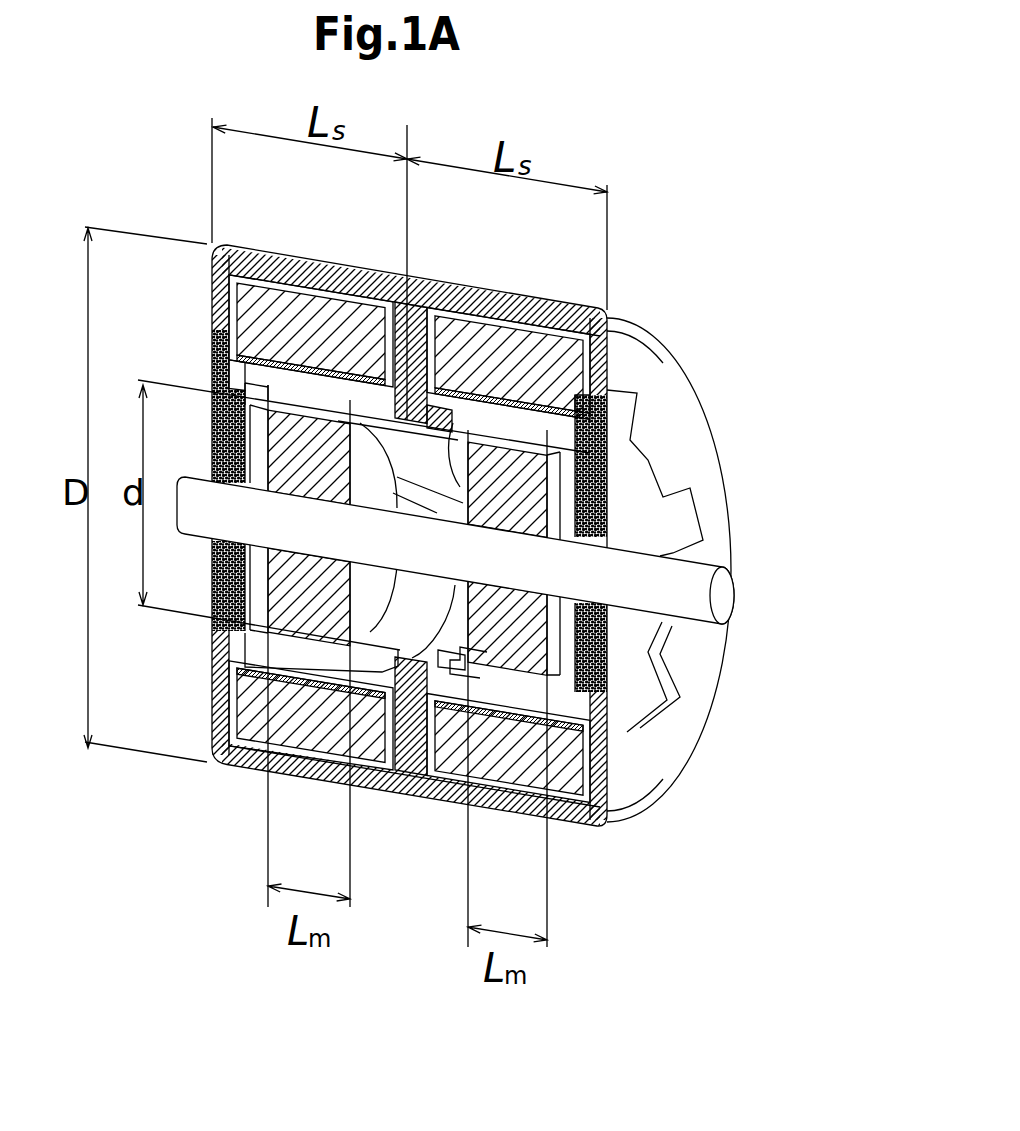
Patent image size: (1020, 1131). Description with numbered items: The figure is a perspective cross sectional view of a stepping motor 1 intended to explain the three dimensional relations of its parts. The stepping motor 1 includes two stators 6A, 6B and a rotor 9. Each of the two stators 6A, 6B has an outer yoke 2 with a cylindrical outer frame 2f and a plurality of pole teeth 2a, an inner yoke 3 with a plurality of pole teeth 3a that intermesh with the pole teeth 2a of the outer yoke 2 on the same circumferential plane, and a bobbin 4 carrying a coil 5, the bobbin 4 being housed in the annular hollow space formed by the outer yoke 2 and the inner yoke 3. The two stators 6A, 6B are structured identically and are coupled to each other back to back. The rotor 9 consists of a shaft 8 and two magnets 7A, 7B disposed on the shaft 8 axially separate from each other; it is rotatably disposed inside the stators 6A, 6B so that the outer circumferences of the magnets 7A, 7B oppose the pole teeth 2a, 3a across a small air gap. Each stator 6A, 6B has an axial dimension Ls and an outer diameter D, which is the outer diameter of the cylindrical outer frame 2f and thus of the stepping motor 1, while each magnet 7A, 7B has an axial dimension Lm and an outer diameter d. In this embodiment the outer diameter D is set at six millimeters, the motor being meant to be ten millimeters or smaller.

The stepping motor 1 is at (711, 282).
The outer yoke 2 is at (367, 790).
The pole teeth 2a is at (237, 770).
The cylindrical outer frame 2f is at (297, 783).
The inner yoke 3 is at (402, 287).
The pole teeth 3a is at (300, 413).
The bobbin 4 is at (618, 318).
The coil 5 is at (362, 320).
The stator 6A is at (513, 601).
The stator 6B is at (298, 552).
The magnet 7A is at (562, 395).
The magnet 7B is at (262, 283).
The shaft 8 is at (735, 592).
The rotor 9 is at (772, 596).